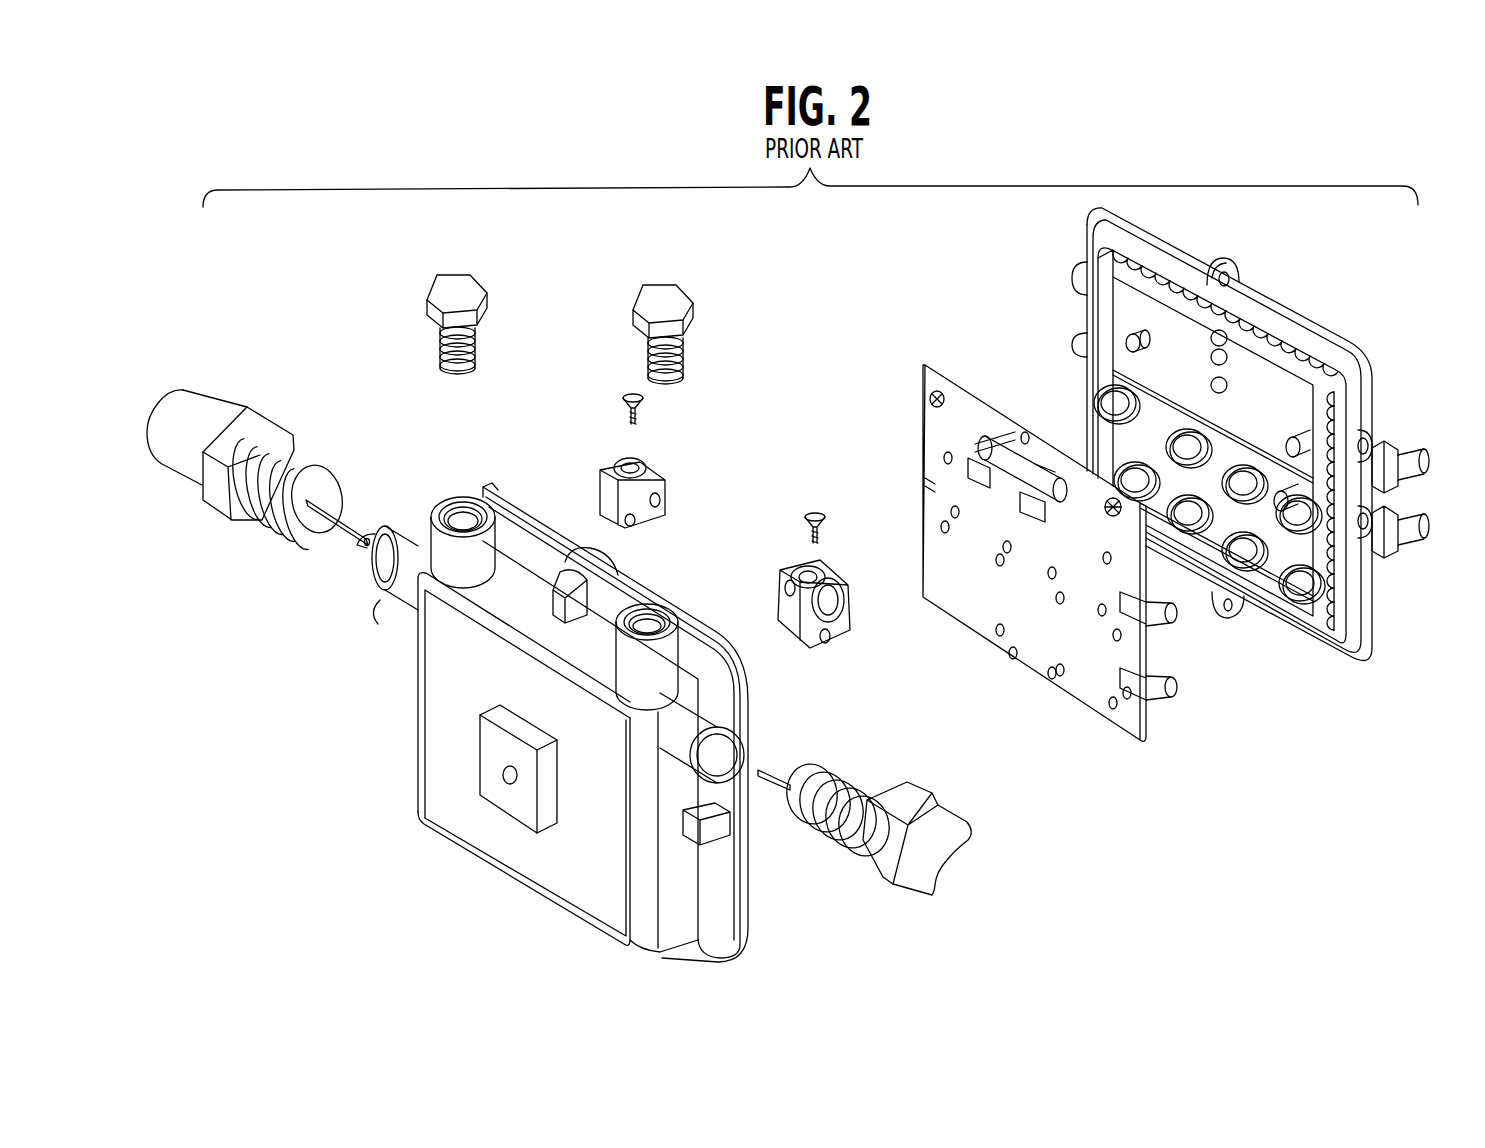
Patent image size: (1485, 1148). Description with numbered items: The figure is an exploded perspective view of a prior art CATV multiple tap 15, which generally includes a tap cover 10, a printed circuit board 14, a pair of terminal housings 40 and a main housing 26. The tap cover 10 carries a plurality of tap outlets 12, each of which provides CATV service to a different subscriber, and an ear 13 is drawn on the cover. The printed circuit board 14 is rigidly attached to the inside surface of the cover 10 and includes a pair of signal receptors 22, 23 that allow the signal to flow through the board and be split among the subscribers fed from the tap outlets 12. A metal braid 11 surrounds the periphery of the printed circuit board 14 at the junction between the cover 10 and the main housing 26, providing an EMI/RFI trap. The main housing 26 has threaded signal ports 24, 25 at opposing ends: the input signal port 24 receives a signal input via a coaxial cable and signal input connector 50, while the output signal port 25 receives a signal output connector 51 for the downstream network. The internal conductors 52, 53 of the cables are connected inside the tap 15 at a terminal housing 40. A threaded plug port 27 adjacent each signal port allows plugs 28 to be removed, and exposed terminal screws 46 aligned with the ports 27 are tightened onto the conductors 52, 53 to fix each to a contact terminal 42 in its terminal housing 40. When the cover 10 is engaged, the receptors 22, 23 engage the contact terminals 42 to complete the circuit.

The tap cover 10 is at (1082, 266).
The metal braid 11 is at (1116, 245).
The tap outlets 12 is at (1429, 514).
The mounting ear 13 is at (1250, 262).
The printed circuit board 14 is at (1147, 720).
The CATV multiple tap 15 is at (357, 338).
The signal receptor 22 is at (1106, 508).
The signal receptor 23 is at (930, 393).
The input signal port 24 is at (633, 763).
The output signal port 25 is at (370, 598).
The main housing 26 is at (480, 490).
The threaded plug port 27 is at (440, 504).
The plugs 28 is at (478, 340).
The terminal housing 40 is at (613, 462).
The contact terminal 42 is at (636, 462).
The terminal screws 46 is at (632, 394).
The signal input connector 50 is at (917, 888).
The signal output connector 51 is at (254, 406).
The internal conductor 52 is at (772, 775).
The internal conductor 53 is at (355, 517).